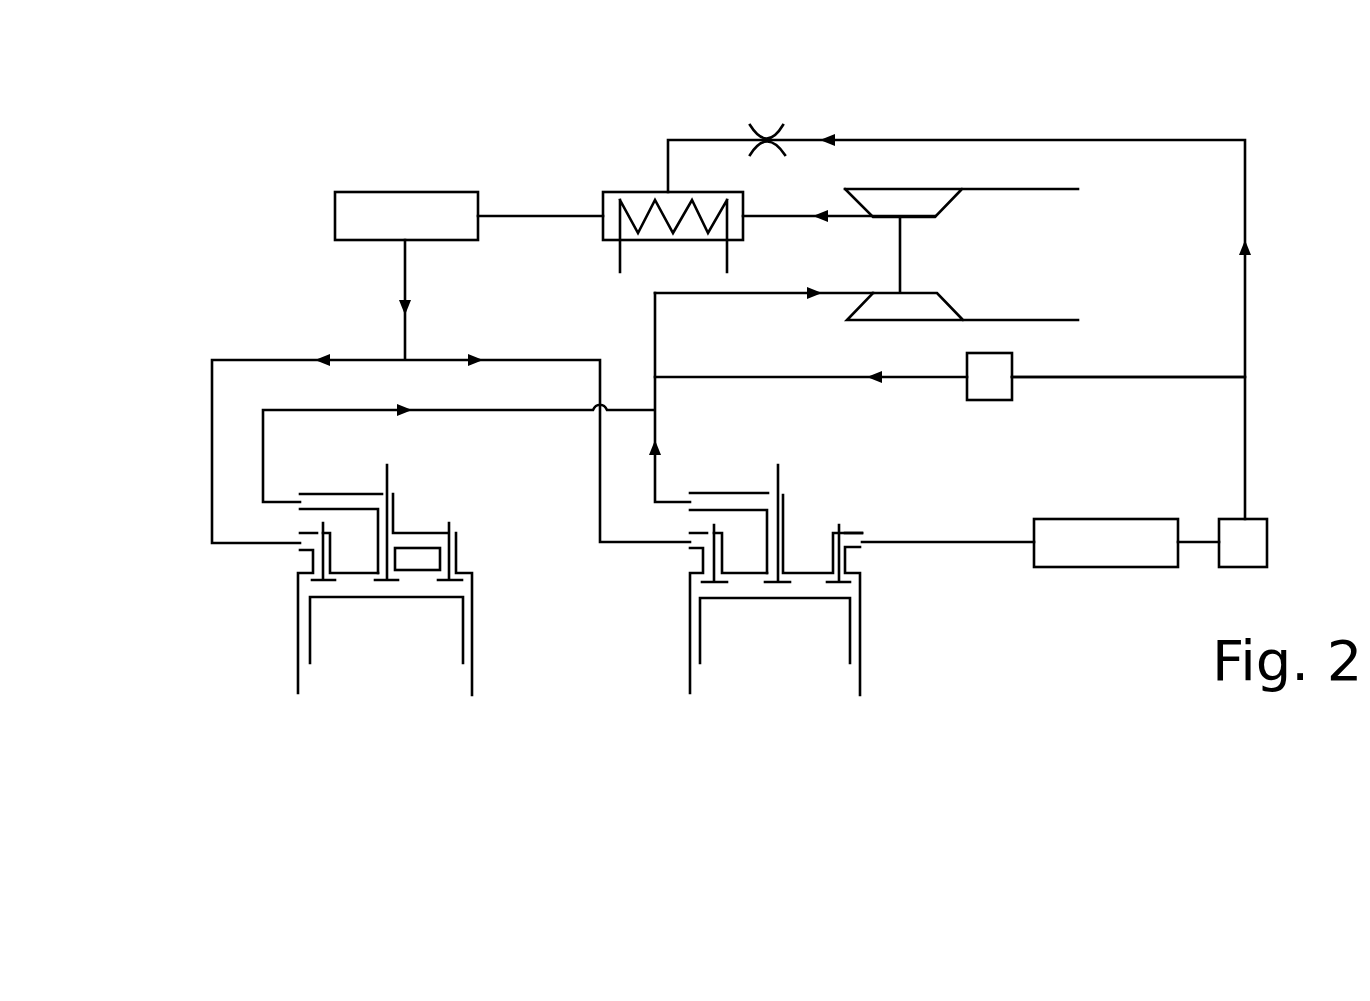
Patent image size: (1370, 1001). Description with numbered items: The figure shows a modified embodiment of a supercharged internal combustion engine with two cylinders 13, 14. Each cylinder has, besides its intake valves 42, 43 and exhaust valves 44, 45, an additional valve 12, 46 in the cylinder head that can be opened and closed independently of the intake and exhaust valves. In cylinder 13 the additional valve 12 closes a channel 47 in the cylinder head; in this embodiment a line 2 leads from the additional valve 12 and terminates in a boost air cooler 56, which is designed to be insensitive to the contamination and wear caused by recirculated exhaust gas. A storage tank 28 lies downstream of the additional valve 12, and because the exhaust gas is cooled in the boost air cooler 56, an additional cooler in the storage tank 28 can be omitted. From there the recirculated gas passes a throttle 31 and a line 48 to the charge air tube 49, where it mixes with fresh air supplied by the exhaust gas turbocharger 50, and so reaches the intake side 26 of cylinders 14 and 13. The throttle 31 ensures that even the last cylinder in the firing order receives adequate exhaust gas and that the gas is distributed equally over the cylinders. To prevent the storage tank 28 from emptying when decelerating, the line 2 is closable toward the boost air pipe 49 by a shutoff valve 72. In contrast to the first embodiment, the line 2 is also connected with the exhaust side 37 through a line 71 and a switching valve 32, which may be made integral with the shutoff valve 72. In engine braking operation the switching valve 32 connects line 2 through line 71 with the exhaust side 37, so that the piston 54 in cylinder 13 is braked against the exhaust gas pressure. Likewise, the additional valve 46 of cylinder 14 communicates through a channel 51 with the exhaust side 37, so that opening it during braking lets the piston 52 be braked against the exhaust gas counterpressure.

The line 2 is at (890, 545).
The additional valve 12 is at (842, 542).
The cylinder 13 is at (863, 683).
The cylinder 14 is at (300, 690).
The intake side 26 is at (274, 562).
The storage tank 28 is at (1108, 517).
The throttle 31 is at (768, 130).
The switching valve 32 is at (983, 367).
The exhaust side 37 is at (412, 498).
The intake valve 42 is at (318, 590).
The intake valve 43 is at (708, 583).
The exhaust valve 44 is at (387, 582).
The exhaust valve 45 is at (777, 582).
The additional valve 46 is at (450, 558).
The channel 47 is at (836, 538).
The line 48 is at (505, 208).
The charge air tube 49 is at (355, 208).
The exhaust gas turbocharger 50 is at (909, 165).
The channel 51 is at (422, 543).
The piston 52 is at (465, 610).
The piston 54 is at (853, 647).
The boost air cooler 56 is at (672, 193).
The line 71 is at (1097, 373).
The shutoff valve 72 is at (1248, 540).